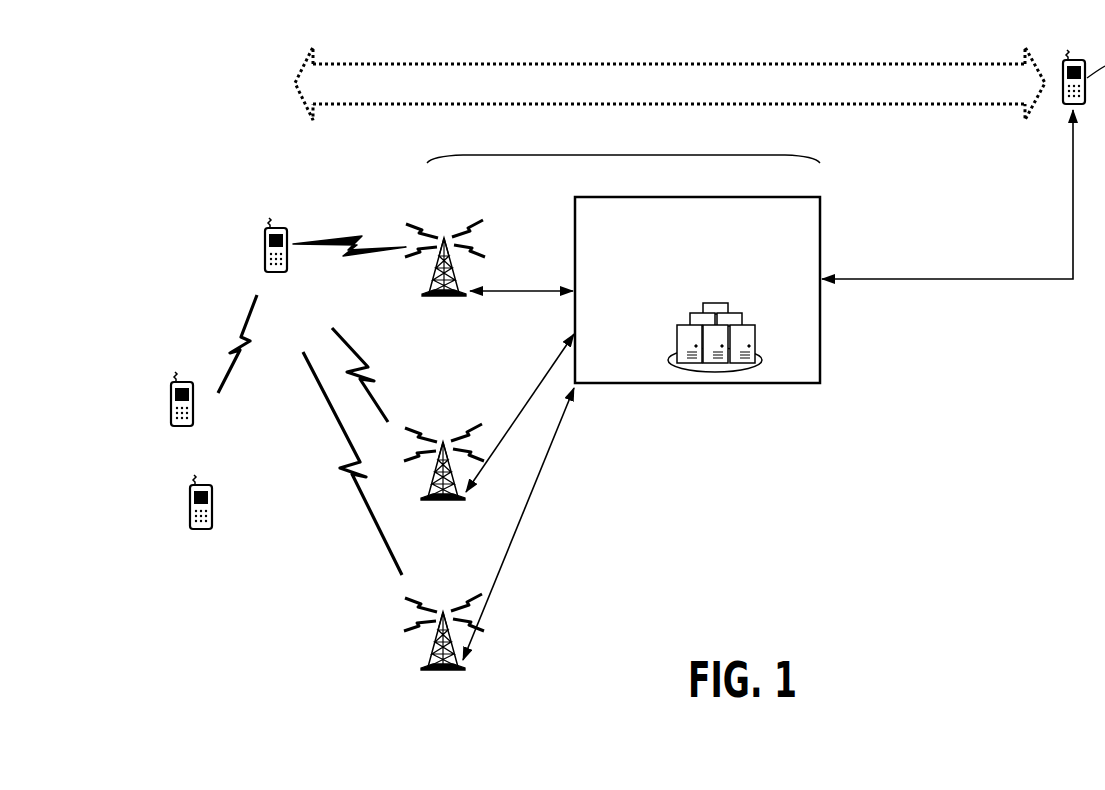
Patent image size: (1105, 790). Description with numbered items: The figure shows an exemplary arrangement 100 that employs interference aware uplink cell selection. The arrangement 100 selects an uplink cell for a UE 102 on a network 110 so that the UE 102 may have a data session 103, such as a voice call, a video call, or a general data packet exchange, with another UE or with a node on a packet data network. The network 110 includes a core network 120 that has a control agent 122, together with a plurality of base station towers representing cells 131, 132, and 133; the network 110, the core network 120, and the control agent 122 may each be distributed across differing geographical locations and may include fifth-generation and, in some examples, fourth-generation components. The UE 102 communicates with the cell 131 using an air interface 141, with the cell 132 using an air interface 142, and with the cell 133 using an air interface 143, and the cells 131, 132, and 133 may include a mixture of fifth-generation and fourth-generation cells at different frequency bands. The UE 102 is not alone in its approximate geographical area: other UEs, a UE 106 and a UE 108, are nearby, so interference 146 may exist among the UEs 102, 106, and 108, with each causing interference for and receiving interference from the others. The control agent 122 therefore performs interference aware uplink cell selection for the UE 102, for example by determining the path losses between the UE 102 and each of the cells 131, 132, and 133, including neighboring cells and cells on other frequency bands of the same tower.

The arrangement 100 is at (976, 491).
The UE 102 is at (272, 274).
The data session 103 is at (735, 97).
The UE 106 is at (178, 428).
The UE 108 is at (197, 530).
The network 110 is at (625, 155).
The core network 120 is at (810, 231).
The control agent 122 is at (705, 305).
The cell 131 is at (443, 298).
The cell 132 is at (460, 503).
The cell 133 is at (443, 672).
The air interface 141 is at (326, 240).
The air interface 142 is at (368, 377).
The air interface 143 is at (391, 556).
The interference 146 is at (237, 332).